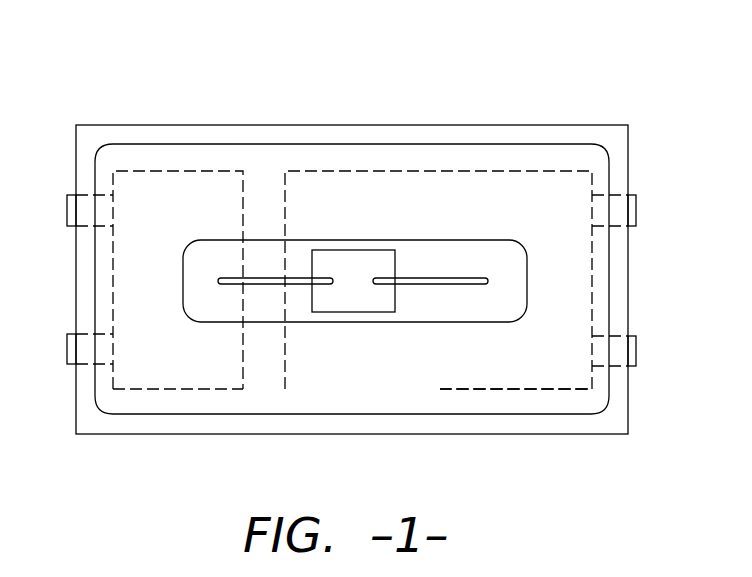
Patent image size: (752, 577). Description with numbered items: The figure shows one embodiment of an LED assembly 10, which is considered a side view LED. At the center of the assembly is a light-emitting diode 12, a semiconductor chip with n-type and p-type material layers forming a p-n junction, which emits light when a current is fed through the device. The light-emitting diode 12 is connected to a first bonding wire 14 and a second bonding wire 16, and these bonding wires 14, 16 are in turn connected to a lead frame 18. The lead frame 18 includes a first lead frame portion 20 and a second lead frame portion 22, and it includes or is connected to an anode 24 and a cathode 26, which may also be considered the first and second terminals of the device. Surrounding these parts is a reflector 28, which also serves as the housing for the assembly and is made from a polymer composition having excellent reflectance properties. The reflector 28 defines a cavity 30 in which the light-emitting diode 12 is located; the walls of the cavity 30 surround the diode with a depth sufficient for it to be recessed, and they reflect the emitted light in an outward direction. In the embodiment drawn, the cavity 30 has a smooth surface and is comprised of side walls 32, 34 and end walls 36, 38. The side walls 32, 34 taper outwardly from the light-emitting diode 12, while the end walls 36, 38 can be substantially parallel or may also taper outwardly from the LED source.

The LED assembly 10 is at (577, 84).
The light-emitting diode 12 is at (357, 262).
The first bonding wire 14 is at (262, 277).
The second bonding wire 16 is at (452, 278).
The lead frame 18 is at (352, 390).
The first lead frame portion 20 is at (198, 392).
The second lead frame portion 22 is at (519, 392).
The anode 24 is at (68, 352).
The cathode 26 is at (637, 350).
The reflector 28 is at (101, 140).
The cavity 30 is at (190, 190).
The side wall 32 is at (318, 137).
The side wall 34 is at (432, 403).
The end wall 36 is at (103, 278).
The end wall 38 is at (600, 278).